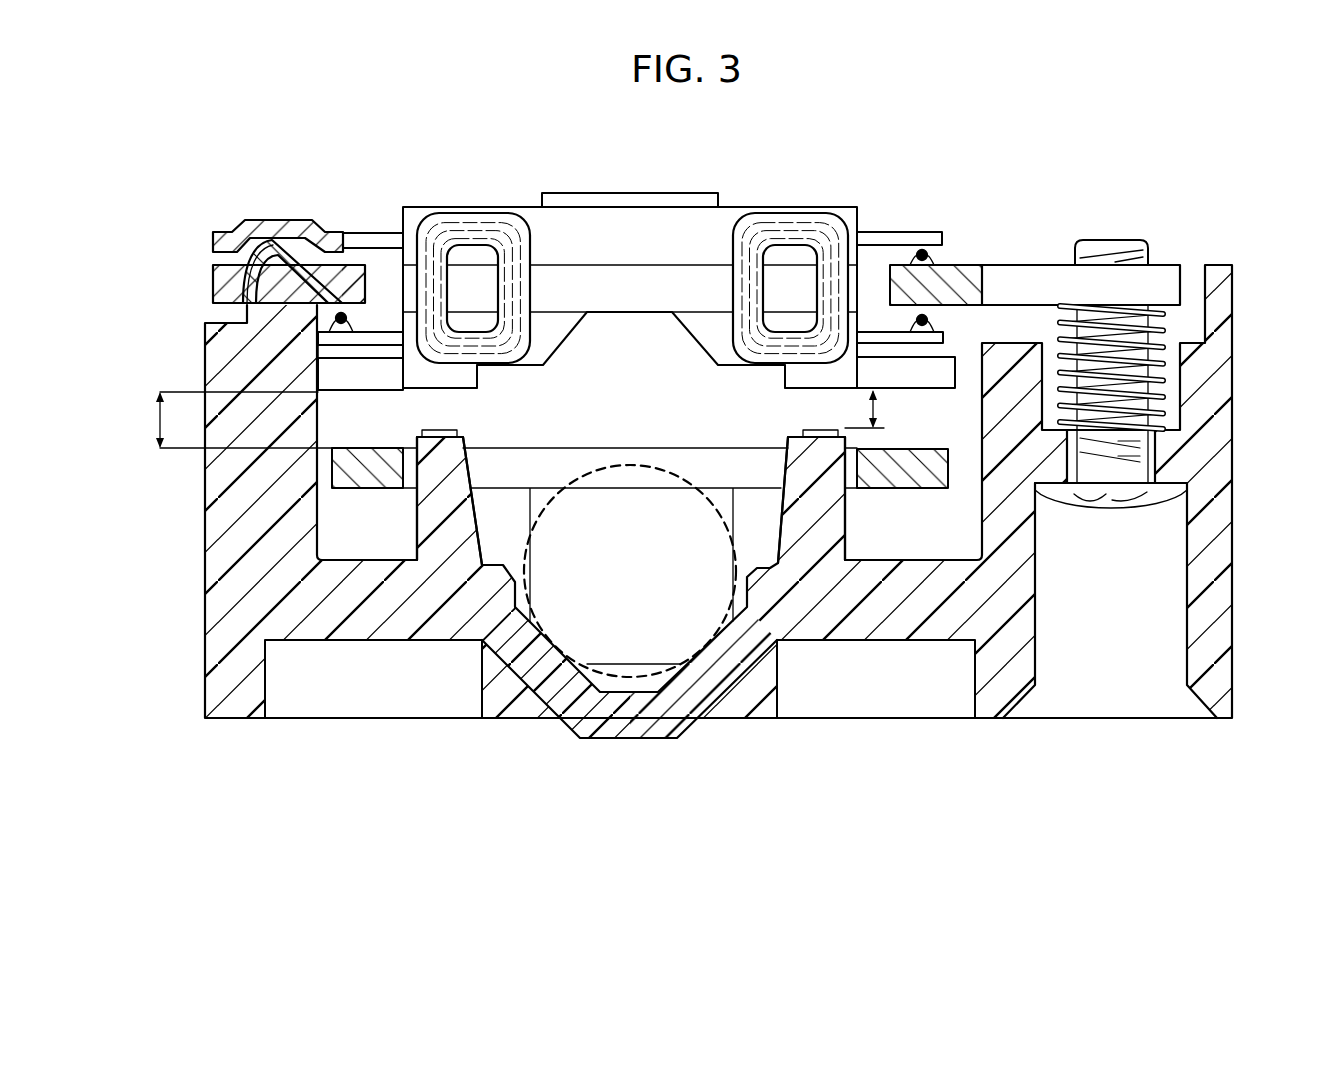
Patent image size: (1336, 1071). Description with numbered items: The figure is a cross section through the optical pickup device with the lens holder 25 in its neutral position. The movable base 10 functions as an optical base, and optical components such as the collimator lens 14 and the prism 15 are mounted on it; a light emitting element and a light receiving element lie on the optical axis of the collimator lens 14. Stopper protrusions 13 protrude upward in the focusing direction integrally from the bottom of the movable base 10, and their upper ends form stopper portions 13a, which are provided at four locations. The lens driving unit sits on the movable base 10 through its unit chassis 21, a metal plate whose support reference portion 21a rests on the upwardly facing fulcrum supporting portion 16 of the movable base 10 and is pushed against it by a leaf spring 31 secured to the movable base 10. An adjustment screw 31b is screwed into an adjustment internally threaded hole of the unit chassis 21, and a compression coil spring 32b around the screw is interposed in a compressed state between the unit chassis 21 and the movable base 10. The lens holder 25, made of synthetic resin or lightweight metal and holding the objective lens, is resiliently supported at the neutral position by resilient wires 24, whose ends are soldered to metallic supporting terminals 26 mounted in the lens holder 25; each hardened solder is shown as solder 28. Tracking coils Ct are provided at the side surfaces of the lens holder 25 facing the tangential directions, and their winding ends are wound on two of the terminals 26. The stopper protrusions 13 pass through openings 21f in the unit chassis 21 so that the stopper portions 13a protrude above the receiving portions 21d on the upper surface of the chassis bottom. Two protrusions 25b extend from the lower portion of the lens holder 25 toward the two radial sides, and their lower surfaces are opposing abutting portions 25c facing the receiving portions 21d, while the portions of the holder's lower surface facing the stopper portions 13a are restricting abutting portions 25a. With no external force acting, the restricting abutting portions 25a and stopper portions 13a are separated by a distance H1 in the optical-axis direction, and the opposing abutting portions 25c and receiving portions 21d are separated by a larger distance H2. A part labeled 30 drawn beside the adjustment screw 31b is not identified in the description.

The movable base 10 is at (238, 724).
The stopper protrusions 13 is at (478, 532).
The stopper portions 13a is at (458, 432).
The collimator lens 14 is at (612, 682).
The prism 15 is at (503, 572).
The fulcrum supporting portion 16 is at (272, 294).
The unit chassis 21 is at (887, 494).
The support reference portion 21a is at (275, 252).
The receiving portions 21d is at (368, 489).
The openings 21f is at (597, 462).
The resilient wires 24 is at (925, 264).
The lens holder 25 is at (536, 226).
The restricting abutting portions 25a is at (470, 389).
The protrusions 25b is at (340, 378).
The opposing abutting portions 25c is at (350, 395).
The metallic supporting terminals 26 is at (390, 332).
The hardened solder 28 is at (330, 314).
The adjusting screw 30 is at (1175, 235).
The leaf spring 31 is at (243, 218).
The adjustment screw 31b is at (1113, 497).
The compression coil spring 32b is at (1160, 357).
The tracking coils Ct is at (470, 222).
The distance H1 is at (856, 409).
The distance H2 is at (224, 420).